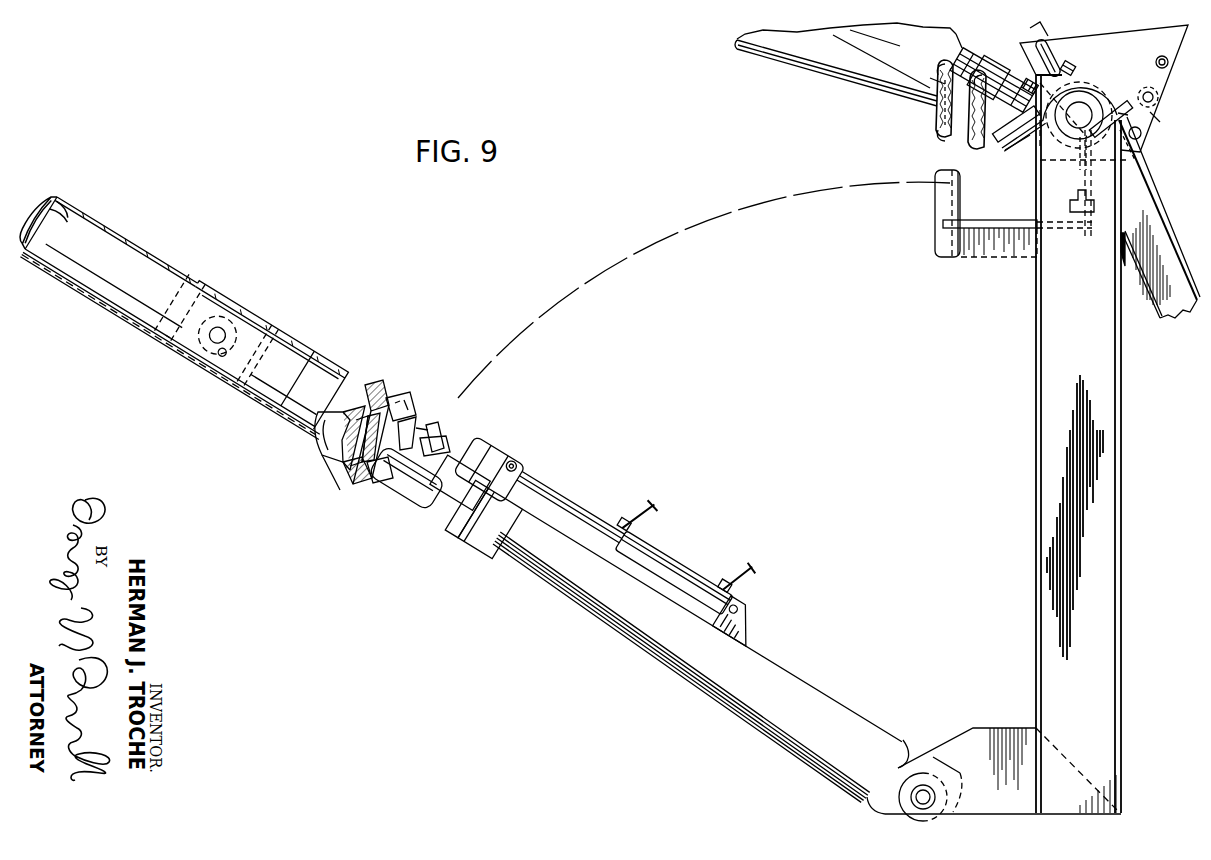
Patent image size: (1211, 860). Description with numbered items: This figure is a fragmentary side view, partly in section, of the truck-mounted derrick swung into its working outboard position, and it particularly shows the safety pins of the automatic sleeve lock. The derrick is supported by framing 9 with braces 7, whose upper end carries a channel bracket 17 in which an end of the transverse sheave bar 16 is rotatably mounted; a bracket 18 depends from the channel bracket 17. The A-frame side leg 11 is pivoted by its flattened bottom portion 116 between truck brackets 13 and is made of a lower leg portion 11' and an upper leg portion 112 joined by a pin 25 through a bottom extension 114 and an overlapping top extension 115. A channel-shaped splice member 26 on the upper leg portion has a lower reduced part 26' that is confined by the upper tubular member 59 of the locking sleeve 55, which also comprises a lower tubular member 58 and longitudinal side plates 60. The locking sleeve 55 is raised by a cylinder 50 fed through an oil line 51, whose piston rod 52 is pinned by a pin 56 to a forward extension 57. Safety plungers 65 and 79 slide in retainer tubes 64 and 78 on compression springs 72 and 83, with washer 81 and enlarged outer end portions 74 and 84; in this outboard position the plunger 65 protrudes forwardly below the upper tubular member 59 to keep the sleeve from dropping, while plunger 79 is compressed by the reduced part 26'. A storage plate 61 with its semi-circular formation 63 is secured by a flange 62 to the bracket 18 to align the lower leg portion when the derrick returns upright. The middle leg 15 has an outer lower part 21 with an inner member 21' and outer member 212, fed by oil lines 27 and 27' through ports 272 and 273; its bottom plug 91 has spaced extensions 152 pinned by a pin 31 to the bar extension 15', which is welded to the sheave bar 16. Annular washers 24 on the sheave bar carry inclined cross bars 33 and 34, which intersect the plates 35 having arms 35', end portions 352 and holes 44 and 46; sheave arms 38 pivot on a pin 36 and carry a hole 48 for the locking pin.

The A-frame side leg 11 is at (187, 318).
The upper leg portion 112 is at (62, 206).
The bottom extension 114 is at (208, 312).
The top extension 115 is at (262, 341).
The flattened bottom portion 116 is at (926, 755).
The lower leg portion 11' is at (693, 655).
The splice member 26 is at (249, 326).
The lower reduced part 26' is at (313, 482).
The pin 25 is at (229, 331).
The upper tubular member 59 is at (372, 392).
The retainer tube 78 is at (345, 464).
The plunger 79 is at (352, 470).
The enlarged outer end portion 84 is at (360, 468).
The compression spring 83 is at (376, 462).
The washer 81 is at (394, 410).
The retainer tube 64 is at (438, 440).
The enlarged outer end portion 74 is at (430, 424).
The plunger 65 is at (434, 428).
The compression spring 72 is at (414, 491).
The longitudinal side plate 60 is at (457, 478).
The forward extension 57 is at (492, 460).
The pin 56 is at (516, 467).
The lower tubular member 58 is at (462, 523).
The locking sleeve 55 is at (481, 551).
The piston rod 52 is at (601, 521).
The cylinder 50 is at (669, 561).
The oil line 51 is at (752, 553).
The truck bracket 13 is at (985, 728).
The framing 9 is at (1038, 506).
The semi-circular formation 63 is at (936, 234).
The storage plate 61 is at (983, 250).
The flange 62 is at (1080, 202).
The middle leg 15 is at (837, 64).
The outer lower part 21 is at (879, 72).
The outer member 212 is at (878, 54).
The inner member 21' is at (915, 115).
The oil line 27 is at (962, 128).
The oil line 27' is at (912, 155).
The port 272 is at (930, 90).
The port 273 is at (977, 72).
The bottom plug 91 is at (947, 130).
The bar extension 15' is at (994, 65).
The spaced extension 152 is at (986, 60).
The channel bracket 17 is at (1090, 77).
The hole 44 is at (1162, 29).
The cross bar 34 is at (1056, 52).
The arm 35' is at (1053, 27).
The plate 35 is at (1078, 101).
The pin 31 is at (1013, 152).
The cross bar 33 is at (1041, 146).
The annular washer 24 is at (1105, 92).
The sheave arm 38 is at (1168, 62).
The hole 48 is at (1164, 66).
The pin 36 is at (1153, 97).
The end portion 352 is at (1153, 120).
The hole 46 is at (1141, 134).
The sheave bar 16 is at (1112, 157).
The bracket 18 is at (1110, 178).
The brace 7 is at (1150, 310).